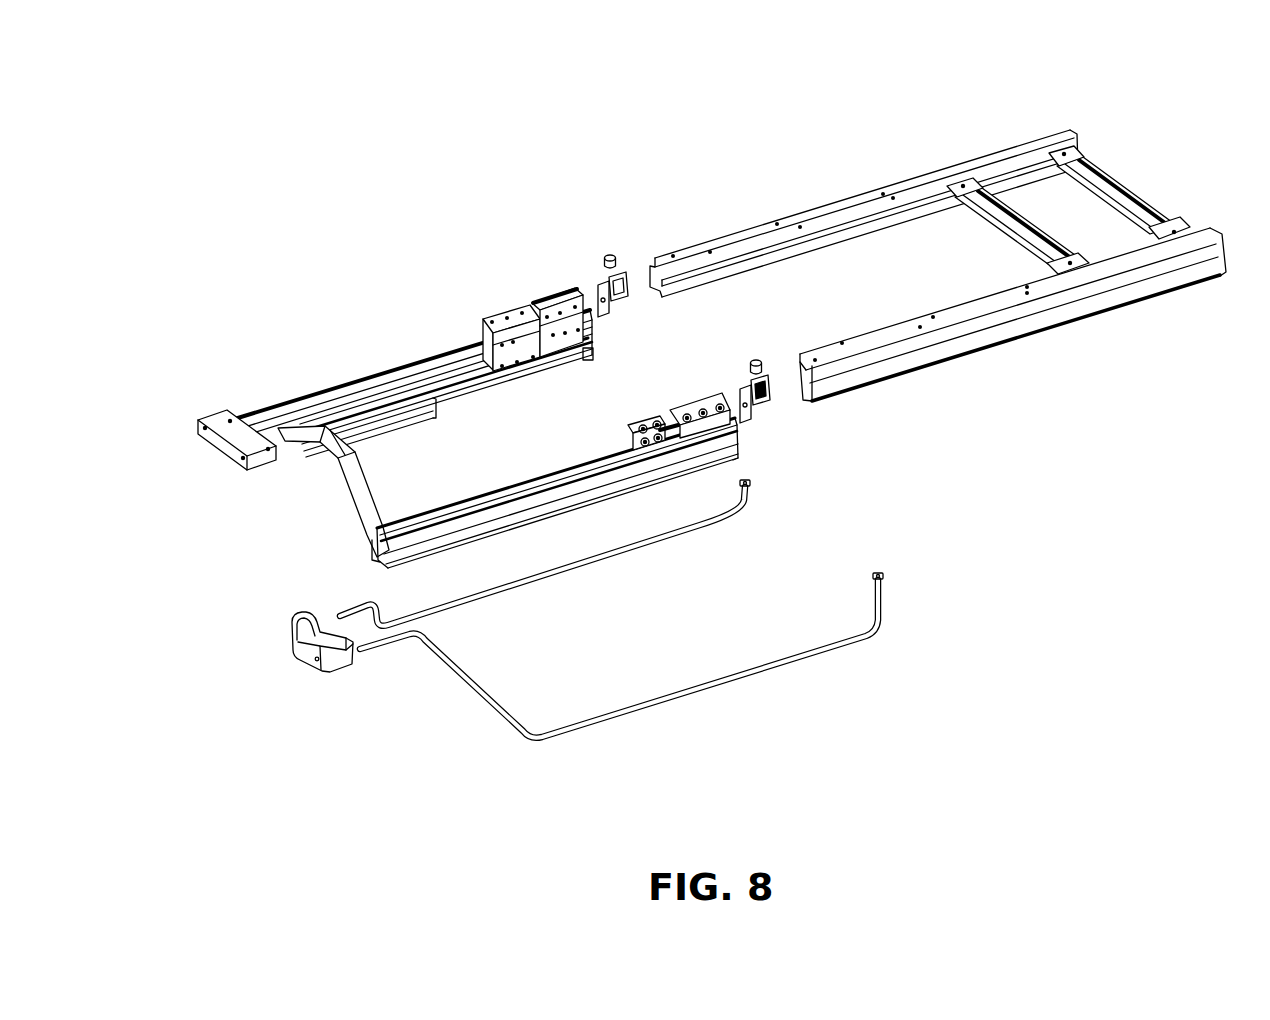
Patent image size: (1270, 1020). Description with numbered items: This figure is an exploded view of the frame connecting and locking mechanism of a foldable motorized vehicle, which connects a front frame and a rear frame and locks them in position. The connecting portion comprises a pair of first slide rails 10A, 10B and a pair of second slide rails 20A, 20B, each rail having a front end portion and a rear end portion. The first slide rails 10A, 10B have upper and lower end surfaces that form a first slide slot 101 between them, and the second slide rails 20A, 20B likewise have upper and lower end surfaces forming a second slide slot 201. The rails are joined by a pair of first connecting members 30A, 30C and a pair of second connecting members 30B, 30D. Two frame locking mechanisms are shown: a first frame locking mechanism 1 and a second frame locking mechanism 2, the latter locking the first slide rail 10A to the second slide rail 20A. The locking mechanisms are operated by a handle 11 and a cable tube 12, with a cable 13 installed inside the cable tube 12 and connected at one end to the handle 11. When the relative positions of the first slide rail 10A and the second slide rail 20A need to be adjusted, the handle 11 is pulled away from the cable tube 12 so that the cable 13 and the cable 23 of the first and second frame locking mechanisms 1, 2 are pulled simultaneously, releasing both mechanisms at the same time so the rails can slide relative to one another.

The first frame locking mechanism 1 is at (787, 407).
The second frame locking mechanism 2 is at (628, 255).
The first slide rail 10A is at (268, 410).
The first slide rail 10B is at (543, 502).
The first slide slot 101 is at (370, 403).
The handle 11 is at (303, 655).
The cable tube 12 is at (713, 687).
The cable 13 is at (887, 580).
The second slide rail 20A is at (1000, 158).
The second slide rail 20B is at (1080, 293).
The second slide slot 201 is at (847, 223).
The cable 23 is at (750, 487).
The first connecting member 30A is at (561, 301).
The second connecting member 30B is at (513, 307).
The first connecting member 30C is at (702, 395).
The second connecting member 30D is at (648, 418).